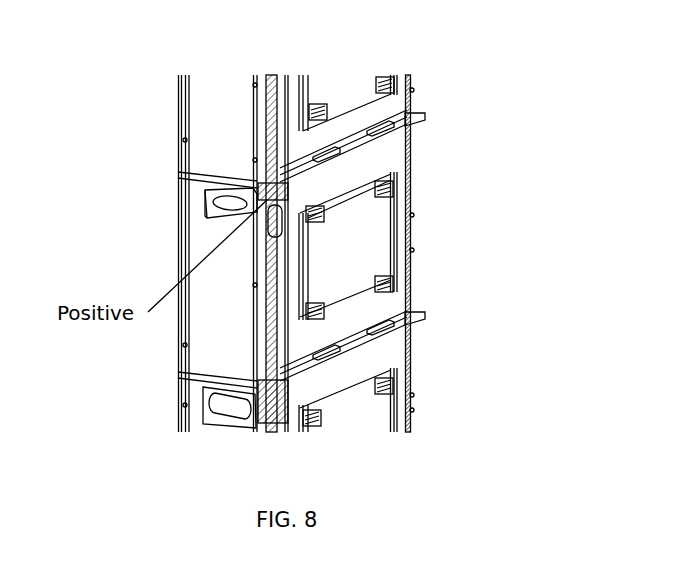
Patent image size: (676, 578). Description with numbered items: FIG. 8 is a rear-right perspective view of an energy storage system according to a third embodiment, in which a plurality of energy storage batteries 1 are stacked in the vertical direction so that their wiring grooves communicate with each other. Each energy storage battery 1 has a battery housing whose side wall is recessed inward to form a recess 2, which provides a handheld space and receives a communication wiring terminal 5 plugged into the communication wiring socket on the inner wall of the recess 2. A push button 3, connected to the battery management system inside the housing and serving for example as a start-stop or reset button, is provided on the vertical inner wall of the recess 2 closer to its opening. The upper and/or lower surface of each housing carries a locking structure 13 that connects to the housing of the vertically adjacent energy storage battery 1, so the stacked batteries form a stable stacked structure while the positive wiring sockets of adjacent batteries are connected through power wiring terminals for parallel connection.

The energy storage battery 1 is at (405, 108).
The recess 2 is at (207, 200).
The push button 3 is at (207, 187).
The communication wiring terminal 5 is at (230, 202).
The locking structure 13 is at (340, 153).